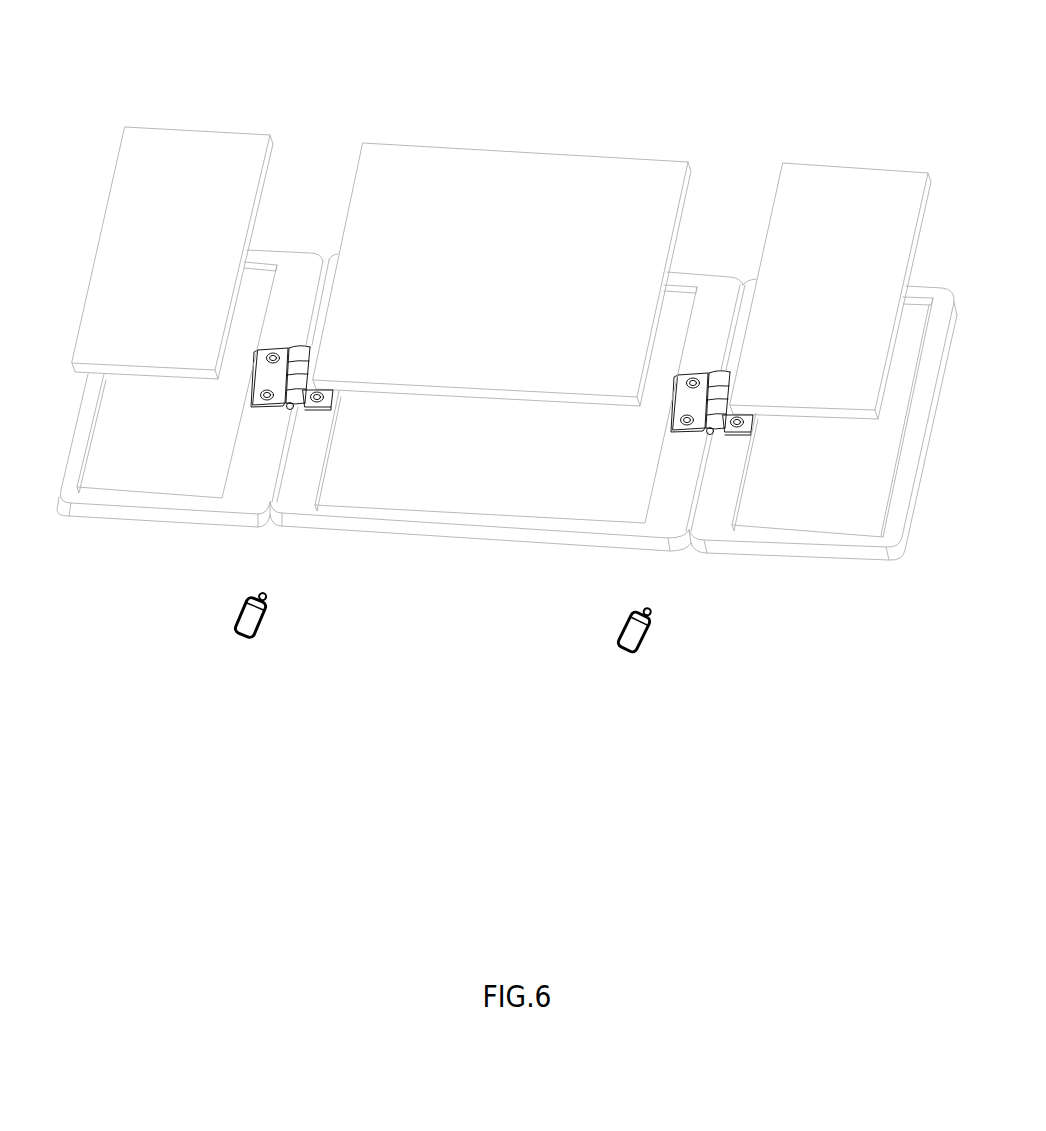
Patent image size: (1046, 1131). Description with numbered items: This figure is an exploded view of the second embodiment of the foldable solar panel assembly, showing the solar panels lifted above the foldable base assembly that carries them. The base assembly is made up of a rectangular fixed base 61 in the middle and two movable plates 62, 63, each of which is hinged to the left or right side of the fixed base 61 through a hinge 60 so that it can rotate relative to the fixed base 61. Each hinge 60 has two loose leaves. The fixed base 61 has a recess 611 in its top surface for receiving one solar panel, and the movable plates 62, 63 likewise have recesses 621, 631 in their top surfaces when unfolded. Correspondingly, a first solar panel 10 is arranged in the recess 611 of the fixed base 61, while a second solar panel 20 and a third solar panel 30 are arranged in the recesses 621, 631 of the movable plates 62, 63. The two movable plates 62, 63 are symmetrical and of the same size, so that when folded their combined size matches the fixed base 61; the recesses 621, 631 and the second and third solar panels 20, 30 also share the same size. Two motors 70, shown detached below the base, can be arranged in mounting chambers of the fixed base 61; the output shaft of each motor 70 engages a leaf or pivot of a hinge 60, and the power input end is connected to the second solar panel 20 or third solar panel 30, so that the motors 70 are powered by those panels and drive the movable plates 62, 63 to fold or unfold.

The first solar panel 10 is at (512, 183).
The second solar panel 20 is at (213, 168).
The third solar panel 30 is at (832, 205).
The hinge 60 is at (501, 490).
The fixed base 61 is at (506, 462).
The movable plate 62 is at (184, 471).
The movable plate 63 is at (823, 504).
The recess 611 is at (508, 468).
The recess 621 is at (197, 472).
The recess 631 is at (853, 487).
The motor 70 is at (243, 636).